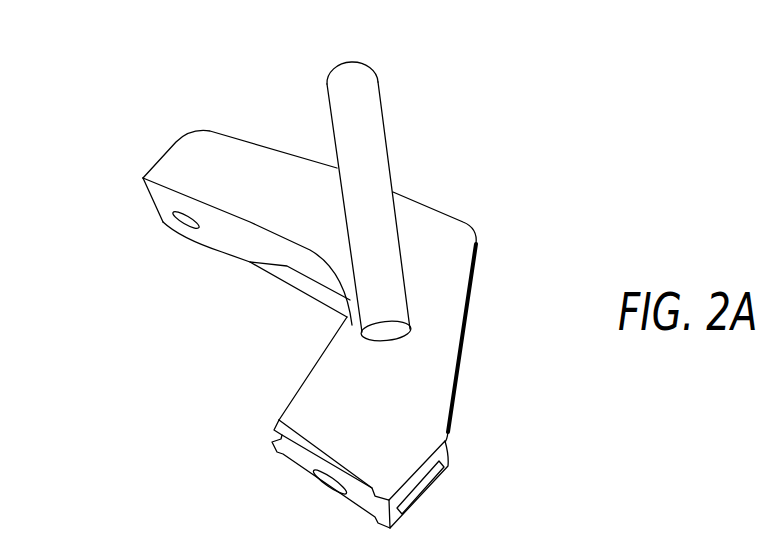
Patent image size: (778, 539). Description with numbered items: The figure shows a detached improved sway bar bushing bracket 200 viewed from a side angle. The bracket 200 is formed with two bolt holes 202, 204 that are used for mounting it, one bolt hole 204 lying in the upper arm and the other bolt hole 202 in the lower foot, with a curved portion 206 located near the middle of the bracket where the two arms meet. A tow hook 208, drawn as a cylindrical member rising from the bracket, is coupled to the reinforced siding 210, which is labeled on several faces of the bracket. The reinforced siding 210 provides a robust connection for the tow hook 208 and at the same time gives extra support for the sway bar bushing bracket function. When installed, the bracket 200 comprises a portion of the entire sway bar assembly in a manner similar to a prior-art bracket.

The sway bar bushing bracket 200 is at (458, 197).
The bolt hole 202 is at (327, 481).
The bolt hole 204 is at (187, 222).
The curved portion 206 is at (333, 321).
The tow hook 208 is at (316, 123).
The reinforced siding 210 is at (298, 207).